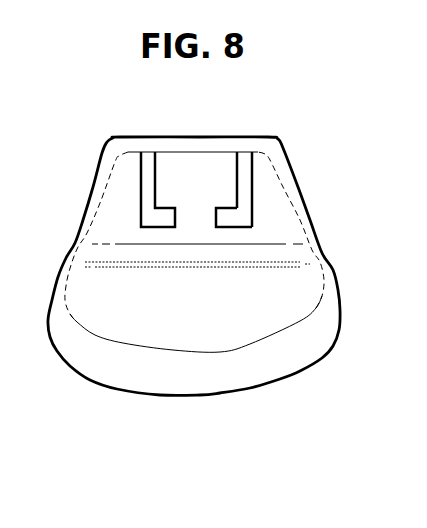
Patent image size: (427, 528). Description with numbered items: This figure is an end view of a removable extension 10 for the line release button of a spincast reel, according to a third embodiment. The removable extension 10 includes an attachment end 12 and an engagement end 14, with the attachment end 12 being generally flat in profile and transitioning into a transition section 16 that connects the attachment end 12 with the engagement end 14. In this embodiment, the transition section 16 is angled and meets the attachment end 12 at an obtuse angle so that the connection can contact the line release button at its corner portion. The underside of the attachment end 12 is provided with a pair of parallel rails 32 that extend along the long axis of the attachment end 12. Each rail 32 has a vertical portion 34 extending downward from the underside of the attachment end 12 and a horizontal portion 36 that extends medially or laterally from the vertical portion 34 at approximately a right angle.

The removable extension 10 is at (331, 191).
The attachment end 12 is at (279, 132).
The engagement end 14 is at (119, 394).
The transition section 16 is at (65, 246).
The rails 32 is at (137, 173).
The vertical portion 34 is at (258, 179).
The horizontal portion 36 is at (259, 217).